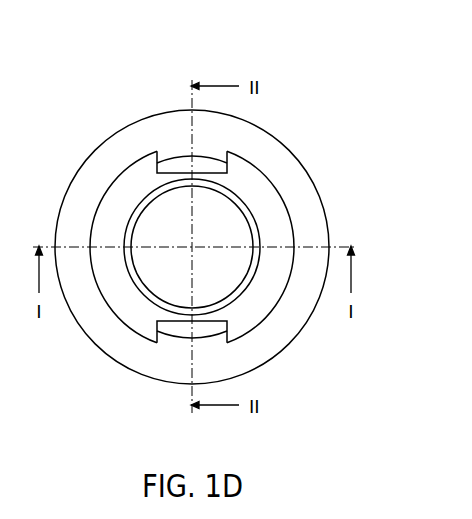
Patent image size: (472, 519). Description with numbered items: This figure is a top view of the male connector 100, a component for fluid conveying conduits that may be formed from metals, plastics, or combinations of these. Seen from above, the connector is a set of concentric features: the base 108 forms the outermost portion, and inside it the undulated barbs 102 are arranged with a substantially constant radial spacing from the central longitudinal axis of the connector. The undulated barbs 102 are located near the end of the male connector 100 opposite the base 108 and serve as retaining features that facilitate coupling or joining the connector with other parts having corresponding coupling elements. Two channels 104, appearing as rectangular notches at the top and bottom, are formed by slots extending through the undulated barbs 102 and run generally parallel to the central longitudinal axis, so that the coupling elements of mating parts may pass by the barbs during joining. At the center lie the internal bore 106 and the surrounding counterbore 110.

The male connector 100 is at (123, 58).
The undulated barbs 102 is at (244, 308).
The channels 104 is at (170, 172).
The internal bore 106 is at (250, 230).
The base 108 is at (276, 137).
The counterbore 110 is at (128, 267).